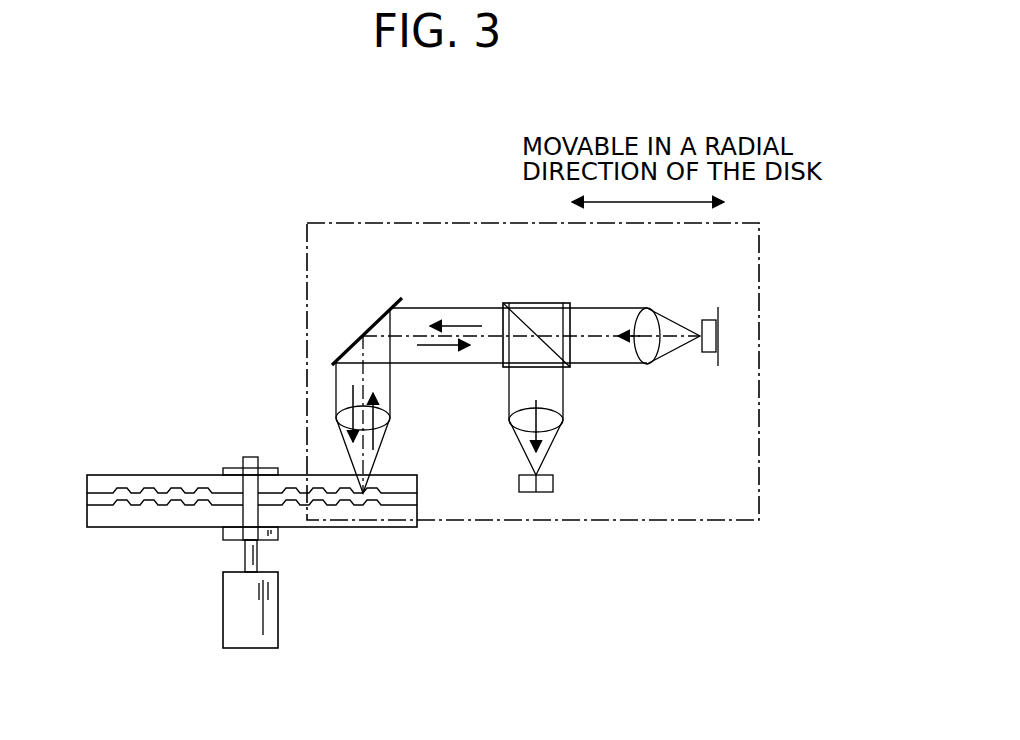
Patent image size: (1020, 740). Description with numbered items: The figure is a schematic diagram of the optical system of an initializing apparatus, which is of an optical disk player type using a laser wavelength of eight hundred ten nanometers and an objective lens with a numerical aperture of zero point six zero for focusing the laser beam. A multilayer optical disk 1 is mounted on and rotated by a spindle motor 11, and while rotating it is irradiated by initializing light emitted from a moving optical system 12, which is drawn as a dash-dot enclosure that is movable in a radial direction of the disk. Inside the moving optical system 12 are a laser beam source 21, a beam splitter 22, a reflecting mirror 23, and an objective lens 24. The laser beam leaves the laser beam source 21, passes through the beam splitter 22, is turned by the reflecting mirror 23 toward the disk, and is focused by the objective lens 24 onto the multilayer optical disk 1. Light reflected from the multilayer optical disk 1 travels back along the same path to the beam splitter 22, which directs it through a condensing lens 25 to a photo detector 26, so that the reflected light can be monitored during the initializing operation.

The multilayer optical disk 1 is at (158, 465).
The spindle motor 11 is at (270, 610).
The moving optical system 12 is at (420, 222).
The laser beam source 21 is at (707, 319).
The beam splitter 22 is at (541, 301).
The reflecting mirror 23 is at (365, 328).
The objective lens 24 is at (390, 418).
The condensing lens 25 is at (560, 427).
The photo detector 26 is at (553, 484).